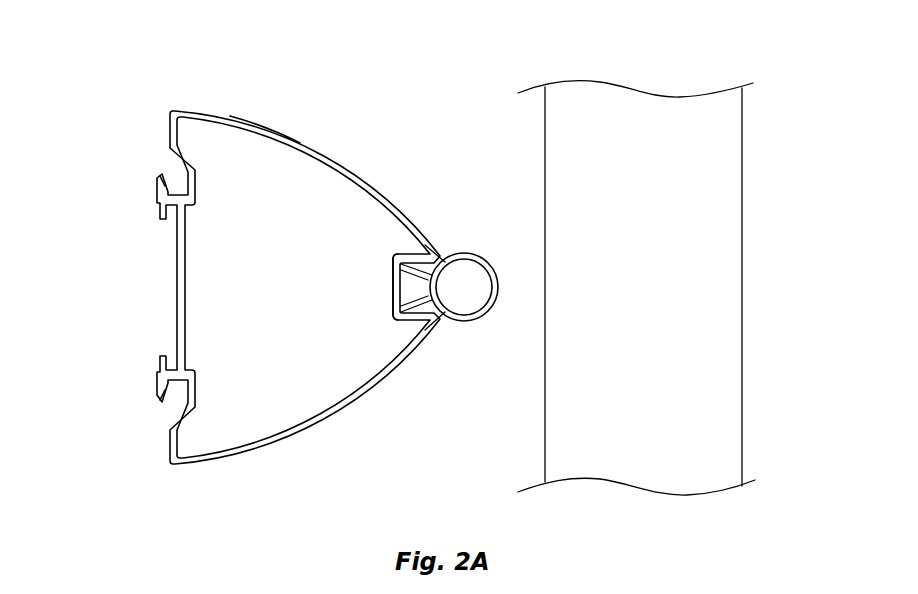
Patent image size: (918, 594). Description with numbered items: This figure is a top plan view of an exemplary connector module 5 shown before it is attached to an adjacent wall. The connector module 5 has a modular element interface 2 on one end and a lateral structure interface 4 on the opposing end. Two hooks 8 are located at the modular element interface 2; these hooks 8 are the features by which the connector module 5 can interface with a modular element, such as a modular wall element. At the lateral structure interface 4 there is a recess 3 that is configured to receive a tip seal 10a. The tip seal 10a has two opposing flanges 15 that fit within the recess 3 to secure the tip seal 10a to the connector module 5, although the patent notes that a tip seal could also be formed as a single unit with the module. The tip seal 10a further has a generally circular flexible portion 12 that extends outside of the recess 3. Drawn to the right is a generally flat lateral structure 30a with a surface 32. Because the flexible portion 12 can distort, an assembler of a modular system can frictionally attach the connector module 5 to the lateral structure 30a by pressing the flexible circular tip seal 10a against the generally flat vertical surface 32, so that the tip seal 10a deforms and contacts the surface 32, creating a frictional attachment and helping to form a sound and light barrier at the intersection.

The modular element interface 2 is at (92, 248).
The connector module 5 is at (265, 100).
The hooks 8 is at (137, 191).
The lateral structure interface 4 is at (436, 150).
The recess 3 is at (393, 288).
The opposing flanges 15 is at (424, 262).
The generally circular flexible portion 12 is at (466, 253).
The tip seal 10a is at (491, 224).
The surface 32 is at (545, 121).
The lateral structure 30a is at (684, 70).